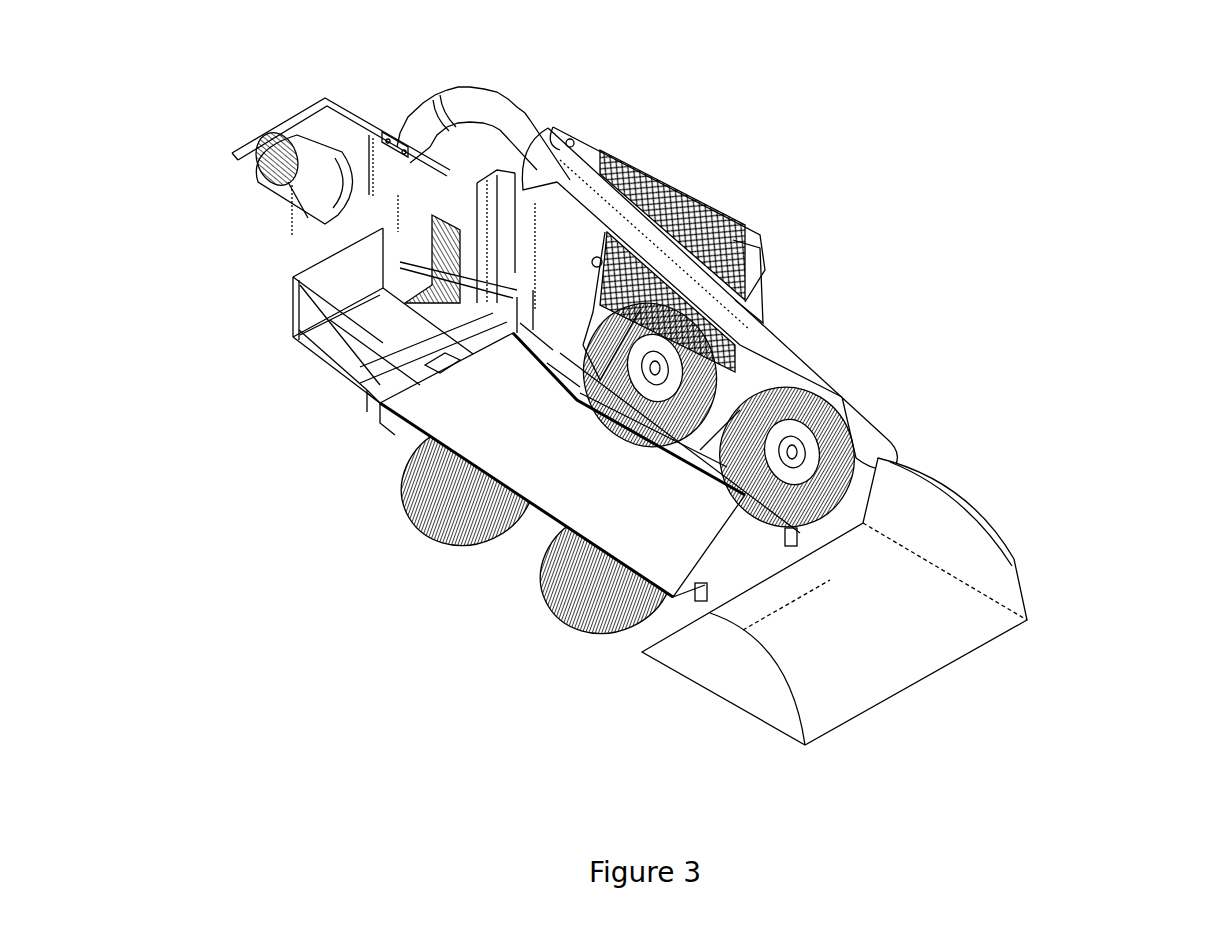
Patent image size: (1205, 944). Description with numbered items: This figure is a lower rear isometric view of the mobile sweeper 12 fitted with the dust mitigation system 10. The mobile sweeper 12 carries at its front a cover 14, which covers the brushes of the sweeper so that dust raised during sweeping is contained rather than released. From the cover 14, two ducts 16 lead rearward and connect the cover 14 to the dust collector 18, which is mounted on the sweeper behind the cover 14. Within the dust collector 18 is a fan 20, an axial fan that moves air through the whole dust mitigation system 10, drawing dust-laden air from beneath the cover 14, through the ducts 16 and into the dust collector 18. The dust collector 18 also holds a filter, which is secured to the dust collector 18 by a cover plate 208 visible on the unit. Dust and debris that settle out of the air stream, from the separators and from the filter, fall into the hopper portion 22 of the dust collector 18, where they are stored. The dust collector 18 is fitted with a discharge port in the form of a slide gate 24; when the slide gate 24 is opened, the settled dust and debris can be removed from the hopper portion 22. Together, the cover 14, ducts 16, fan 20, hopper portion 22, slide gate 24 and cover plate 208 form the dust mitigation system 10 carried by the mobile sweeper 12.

The dust mitigation system 10 is at (620, 386).
The mobile sweeper 12 is at (748, 387).
The cover 14 is at (1010, 557).
The ducts 16 is at (835, 387).
The dust collector 18 is at (356, 257).
The fan 20 is at (302, 180).
The hopper portion 22 is at (297, 333).
The slide gate 24 is at (347, 360).
The cover plate 208 is at (397, 134).